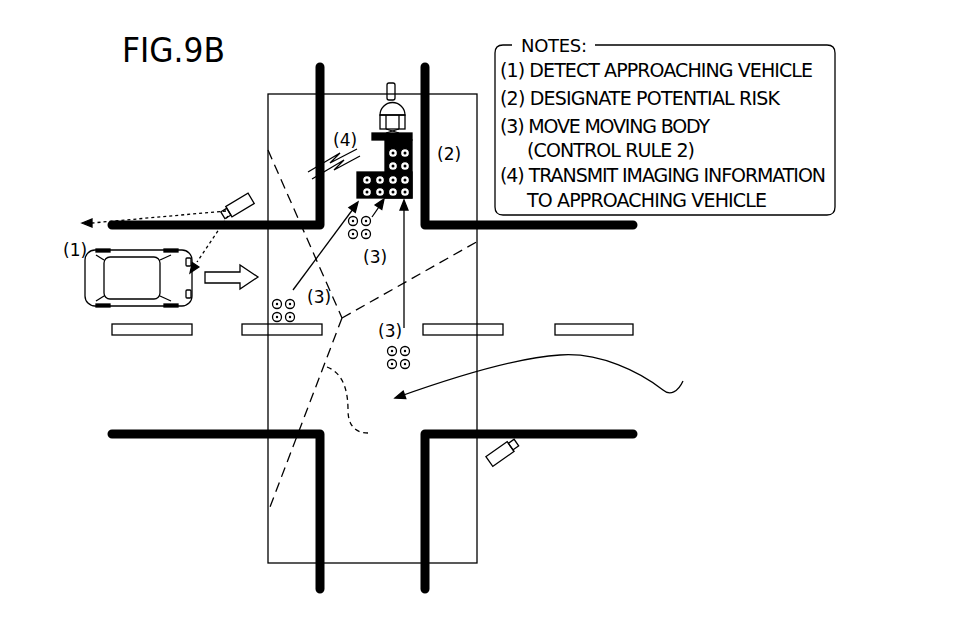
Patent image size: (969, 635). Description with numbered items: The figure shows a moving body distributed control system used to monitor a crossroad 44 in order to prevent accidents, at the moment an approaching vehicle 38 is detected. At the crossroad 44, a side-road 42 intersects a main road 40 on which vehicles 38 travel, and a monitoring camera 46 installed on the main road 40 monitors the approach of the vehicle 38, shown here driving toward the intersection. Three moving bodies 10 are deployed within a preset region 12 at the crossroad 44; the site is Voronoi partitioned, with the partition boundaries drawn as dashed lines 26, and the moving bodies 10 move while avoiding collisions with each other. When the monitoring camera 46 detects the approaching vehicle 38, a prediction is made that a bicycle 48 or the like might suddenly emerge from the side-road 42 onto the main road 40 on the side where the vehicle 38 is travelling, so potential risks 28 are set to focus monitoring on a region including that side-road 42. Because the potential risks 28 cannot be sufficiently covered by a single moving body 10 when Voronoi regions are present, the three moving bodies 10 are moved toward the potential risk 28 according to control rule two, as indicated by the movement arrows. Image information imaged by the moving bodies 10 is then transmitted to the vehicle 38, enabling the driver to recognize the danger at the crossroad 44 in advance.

The moving body 10 is at (375, 239).
The preset region 12 is at (477, 290).
The dashed line 26 is at (364, 403).
The potential risk 28 is at (358, 187).
The vehicle 38 is at (86, 279).
The main road 40 is at (201, 384).
The side-road 42 is at (359, 118).
The crossroad 44 is at (554, 376).
The monitoring camera 46 is at (242, 198).
The bicycle 48 is at (386, 102).